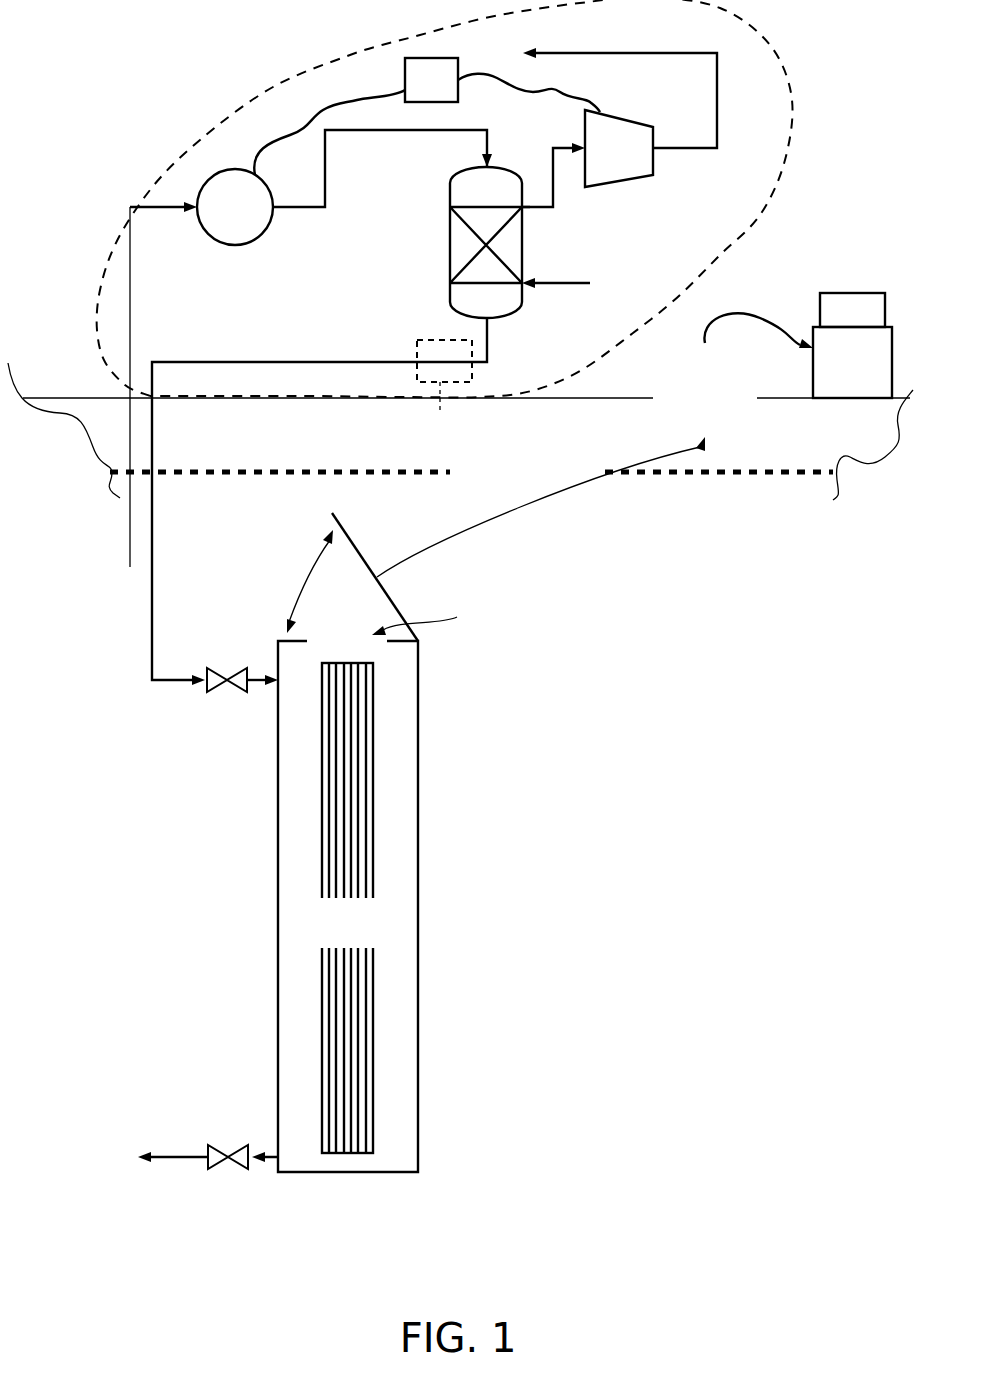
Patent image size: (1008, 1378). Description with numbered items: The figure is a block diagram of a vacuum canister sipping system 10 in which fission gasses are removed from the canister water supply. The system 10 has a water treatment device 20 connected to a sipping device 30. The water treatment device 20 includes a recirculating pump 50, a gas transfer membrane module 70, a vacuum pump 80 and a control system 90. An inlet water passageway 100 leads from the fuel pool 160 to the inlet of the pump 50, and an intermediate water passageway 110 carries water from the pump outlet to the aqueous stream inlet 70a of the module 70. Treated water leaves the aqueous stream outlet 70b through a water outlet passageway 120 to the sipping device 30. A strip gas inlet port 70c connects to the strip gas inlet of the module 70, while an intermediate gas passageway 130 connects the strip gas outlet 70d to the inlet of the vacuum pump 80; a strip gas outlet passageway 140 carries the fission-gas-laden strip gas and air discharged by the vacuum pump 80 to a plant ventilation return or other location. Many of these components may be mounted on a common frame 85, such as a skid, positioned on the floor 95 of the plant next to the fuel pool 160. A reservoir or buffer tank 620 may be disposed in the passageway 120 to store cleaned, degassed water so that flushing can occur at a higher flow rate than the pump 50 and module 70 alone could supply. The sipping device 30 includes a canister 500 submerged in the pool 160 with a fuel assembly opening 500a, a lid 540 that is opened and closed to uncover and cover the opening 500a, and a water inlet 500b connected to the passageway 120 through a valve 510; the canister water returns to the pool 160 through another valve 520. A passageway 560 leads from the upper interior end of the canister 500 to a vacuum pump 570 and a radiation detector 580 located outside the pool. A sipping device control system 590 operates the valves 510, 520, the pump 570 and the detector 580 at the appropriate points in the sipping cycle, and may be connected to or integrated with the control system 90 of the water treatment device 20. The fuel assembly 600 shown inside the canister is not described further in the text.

The vacuum canister sipping system 10 is at (138, 78).
The water treatment device 20 is at (278, 88).
The sipping device 30 is at (456, 812).
The recirculating pump 50 is at (222, 221).
The gas transfer membrane module 70 is at (522, 250).
The aqueous stream inlet 70a is at (487, 165).
The aqueous stream outlet 70b is at (488, 323).
The strip gas inlet passage or port 70c is at (524, 282).
The strip gas outlet 70d is at (523, 205).
The vacuum pump 80 is at (637, 117).
The common frame 85 is at (788, 150).
The control system 90 is at (444, 93).
The floor 95 is at (72, 398).
The inlet water passageway 100 is at (130, 535).
The intermediate water passageway 110 is at (390, 131).
The water outlet passageway 120 is at (152, 548).
The intermediate gas passageway 130 is at (558, 148).
The strip gas outlet passageway 140 is at (718, 107).
The fuel pool 160 is at (572, 722).
The canister 500 is at (418, 995).
The fuel assembly opening 500a is at (431, 612).
The water inlet 500b is at (276, 678).
The valve 510 is at (222, 692).
The valve 520 is at (225, 1170).
The lid 540 is at (355, 542).
The passageway 560 is at (541, 515).
The vacuum pump 570 is at (761, 375).
The radiation detector 580 is at (852, 362).
The sipping device control system 590 is at (852, 310).
The fuel assembly 600 is at (373, 960).
The reservoir or buffer tank 620 is at (427, 373).